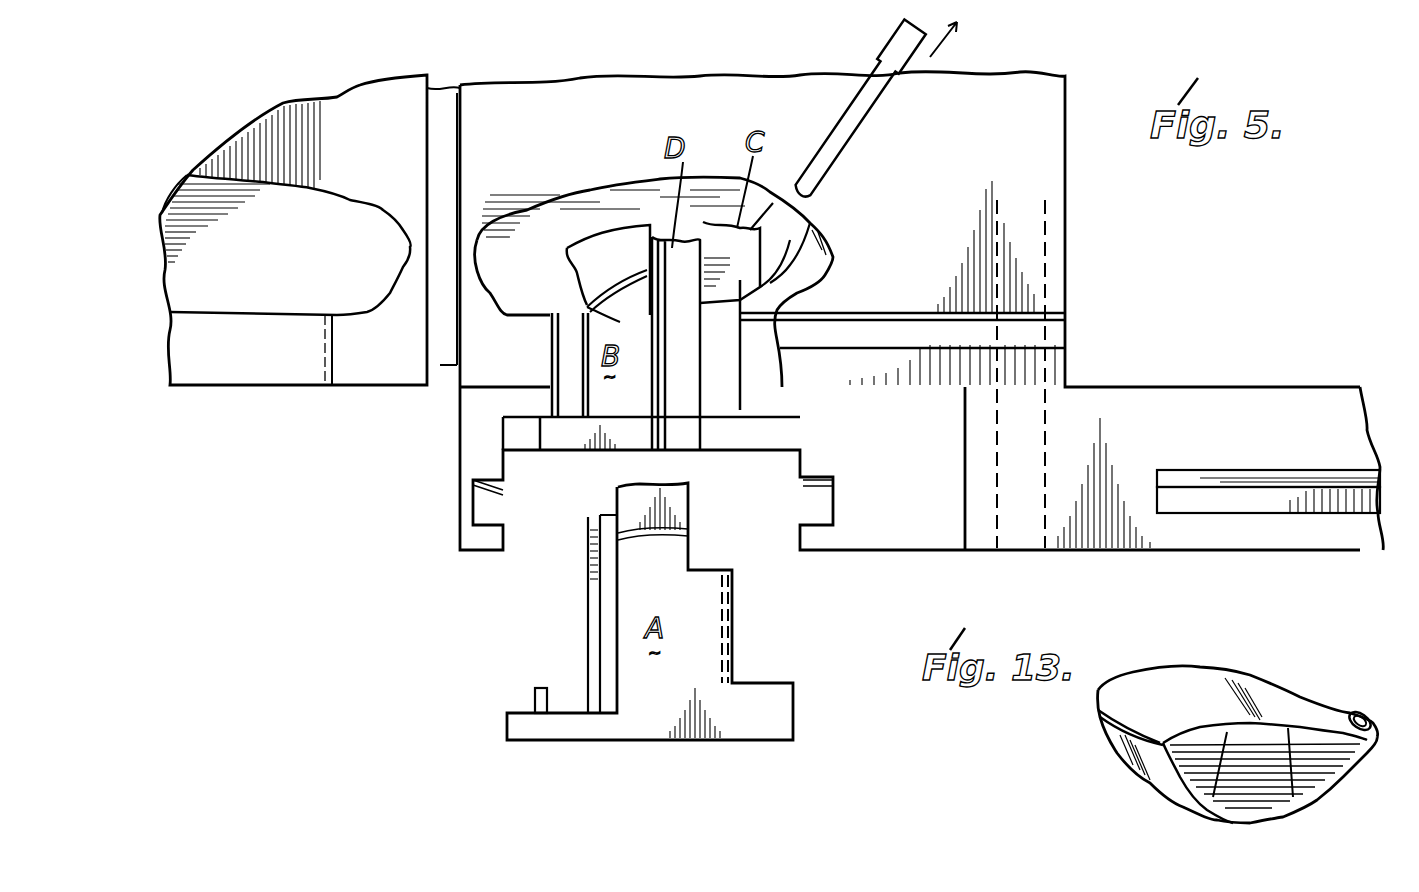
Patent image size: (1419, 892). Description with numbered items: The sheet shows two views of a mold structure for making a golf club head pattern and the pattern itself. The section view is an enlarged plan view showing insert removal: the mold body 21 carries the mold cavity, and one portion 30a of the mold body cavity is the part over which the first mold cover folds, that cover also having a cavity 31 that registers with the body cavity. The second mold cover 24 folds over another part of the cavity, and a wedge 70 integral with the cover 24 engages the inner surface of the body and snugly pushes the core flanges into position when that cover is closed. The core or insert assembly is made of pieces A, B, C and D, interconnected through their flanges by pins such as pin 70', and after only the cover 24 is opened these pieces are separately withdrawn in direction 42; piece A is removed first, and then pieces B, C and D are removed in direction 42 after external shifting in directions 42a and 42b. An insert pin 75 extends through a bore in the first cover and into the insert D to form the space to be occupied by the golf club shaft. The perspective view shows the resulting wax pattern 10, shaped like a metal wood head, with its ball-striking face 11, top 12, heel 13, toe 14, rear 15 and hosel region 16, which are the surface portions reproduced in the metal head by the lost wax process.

In FIG. 5, the wax pattern 10 is at (837, 253).
In FIG. 13, the wax pattern 10 is at (1107, 773).
In FIG. 13, the ball-striking face 11 is at (1233, 783).
In FIG. 13, the top 12 is at (1180, 729).
In FIG. 13, the heel 13 is at (1347, 767).
In FIG. 13, the toe 14 is at (1117, 747).
In FIG. 13, the rear 15 is at (1210, 672).
In FIG. 13, the hosel region 16 is at (1367, 718).
In FIG. 5, the mold body 21 is at (1068, 210).
In FIG. 5, the second mold cover 24 is at (1253, 398).
In FIG. 5, the portion of mold body cavity 30a is at (540, 210).
In FIG. 5, the cavity 31 is at (293, 230).
In FIG. 5, the withdrawal direction 42 is at (657, 838).
In FIG. 5, the external shifting direction 42a is at (578, 353).
In FIG. 5, the external shifting direction 42b is at (750, 368).
In FIG. 5, the wedge 70 is at (1268, 532).
In FIG. 5, the pin 70' is at (505, 682).
In FIG. 5, the insert pin 75 is at (890, 45).